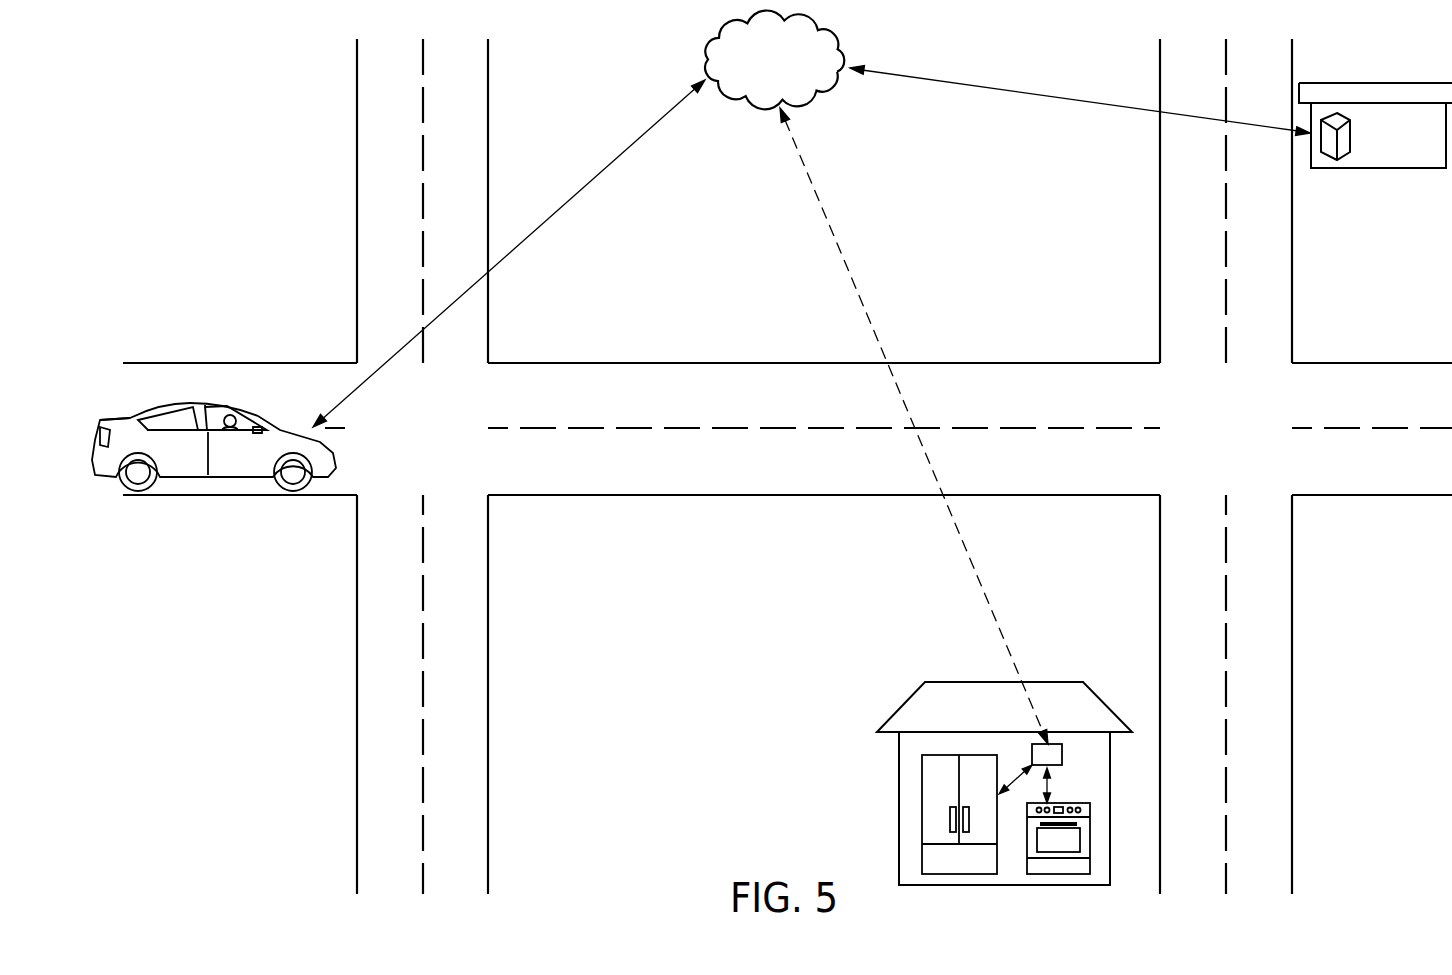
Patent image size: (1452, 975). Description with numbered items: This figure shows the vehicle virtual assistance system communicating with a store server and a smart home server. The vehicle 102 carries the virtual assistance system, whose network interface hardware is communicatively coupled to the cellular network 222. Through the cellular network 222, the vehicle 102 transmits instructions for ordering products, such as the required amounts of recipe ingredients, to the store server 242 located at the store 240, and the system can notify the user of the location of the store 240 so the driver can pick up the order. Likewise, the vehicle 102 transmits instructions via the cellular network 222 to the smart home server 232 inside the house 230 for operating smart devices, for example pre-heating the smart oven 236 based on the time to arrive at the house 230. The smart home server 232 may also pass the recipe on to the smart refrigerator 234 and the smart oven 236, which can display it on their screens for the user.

The vehicle 102 is at (200, 405).
The cellular network 222 is at (703, 55).
The house 230 is at (1058, 682).
The smart home server 232 is at (1052, 744).
The smart refrigerator 234 is at (922, 820).
The smart oven 236 is at (1058, 874).
The store 240 is at (1390, 83).
The store server 242 is at (1352, 138).